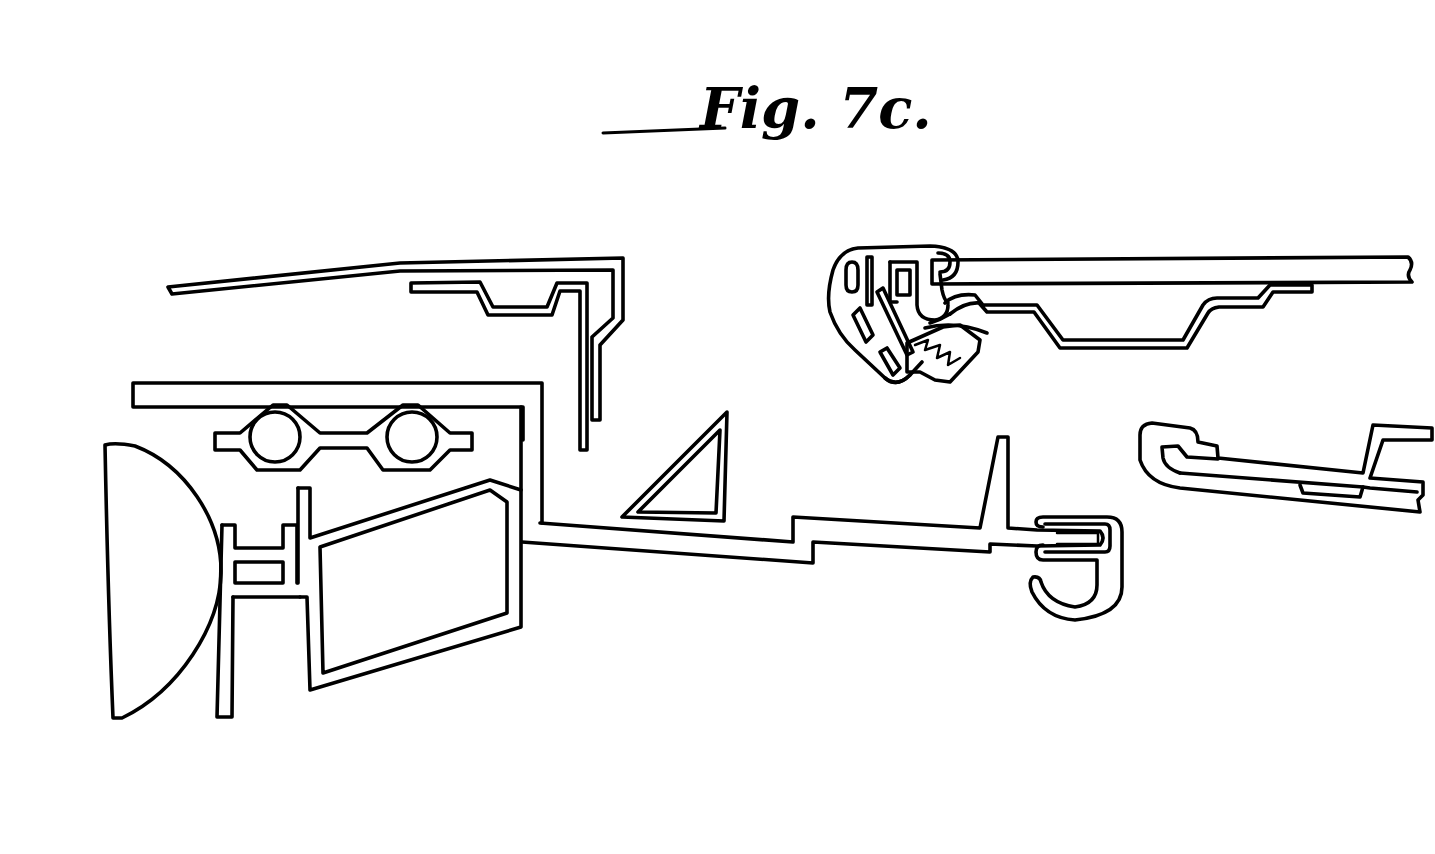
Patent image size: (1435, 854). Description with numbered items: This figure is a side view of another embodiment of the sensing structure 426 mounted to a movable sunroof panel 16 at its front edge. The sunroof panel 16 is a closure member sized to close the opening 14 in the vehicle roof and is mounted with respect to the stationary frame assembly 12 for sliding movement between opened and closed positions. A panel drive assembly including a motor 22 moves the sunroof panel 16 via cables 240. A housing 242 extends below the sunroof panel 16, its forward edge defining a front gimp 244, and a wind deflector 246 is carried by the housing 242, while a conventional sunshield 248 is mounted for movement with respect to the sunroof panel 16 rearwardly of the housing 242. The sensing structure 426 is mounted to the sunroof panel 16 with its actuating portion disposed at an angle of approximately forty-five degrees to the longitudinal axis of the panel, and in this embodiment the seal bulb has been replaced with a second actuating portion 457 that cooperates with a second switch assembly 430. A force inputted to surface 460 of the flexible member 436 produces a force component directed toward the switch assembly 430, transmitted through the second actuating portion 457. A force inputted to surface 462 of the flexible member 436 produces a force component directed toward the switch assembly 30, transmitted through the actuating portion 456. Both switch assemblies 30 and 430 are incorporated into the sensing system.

The stationary frame assembly 12 is at (551, 257).
The opening 14 is at (675, 317).
The sunroof panel 16 is at (1203, 263).
The motor 22 is at (155, 688).
The switch assembly 30 is at (915, 342).
The cables 240 is at (403, 423).
The housing 242 is at (920, 548).
The front gimp 244 is at (1110, 588).
The wind deflector 246 is at (722, 524).
The sunshield 248 is at (1333, 497).
The sensing structure 426 is at (841, 345).
The second switch assembly 430 is at (885, 262).
The flexible member 436 is at (845, 324).
The actuating portion 456 is at (900, 362).
The second actuating portion 457 is at (843, 270).
The surface 460 is at (832, 280).
The surface 462 is at (868, 366).